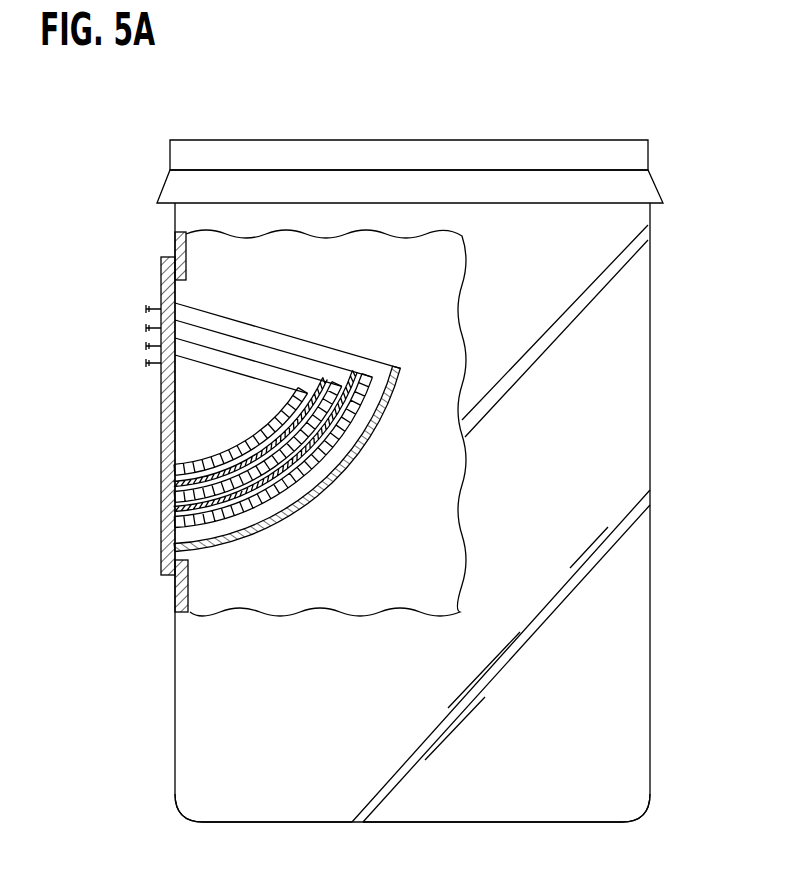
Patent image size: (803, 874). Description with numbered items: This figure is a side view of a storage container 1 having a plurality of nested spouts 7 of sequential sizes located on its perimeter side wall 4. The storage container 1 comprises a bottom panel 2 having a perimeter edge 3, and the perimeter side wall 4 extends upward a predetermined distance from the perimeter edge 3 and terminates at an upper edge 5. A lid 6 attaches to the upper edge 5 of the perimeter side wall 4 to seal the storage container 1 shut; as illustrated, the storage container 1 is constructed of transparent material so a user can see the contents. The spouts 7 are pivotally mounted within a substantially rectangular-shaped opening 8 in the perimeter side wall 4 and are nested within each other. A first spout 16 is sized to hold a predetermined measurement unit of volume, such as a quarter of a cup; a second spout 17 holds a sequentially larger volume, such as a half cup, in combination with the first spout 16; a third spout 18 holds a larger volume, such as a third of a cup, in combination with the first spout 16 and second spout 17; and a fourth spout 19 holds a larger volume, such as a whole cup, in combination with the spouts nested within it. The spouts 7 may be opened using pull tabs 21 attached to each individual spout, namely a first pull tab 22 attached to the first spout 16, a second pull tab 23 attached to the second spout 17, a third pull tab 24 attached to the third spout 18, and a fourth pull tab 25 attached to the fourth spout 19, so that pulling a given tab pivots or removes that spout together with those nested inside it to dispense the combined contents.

The storage container 1 is at (381, 457).
The bottom panel 2 is at (537, 822).
The perimeter edge 3 is at (287, 822).
The perimeter side wall 4 is at (565, 478).
The upper edge 5 is at (632, 190).
The lid 6 is at (632, 157).
The spouts 7 is at (239, 438).
The substantially rectangular-shaped opening 8 is at (178, 291).
The first spout 16 is at (193, 455).
The second spout 17 is at (193, 485).
The third spout 18 is at (193, 513).
The fourth spout 19 is at (193, 540).
The pull tabs 21 is at (109, 345).
The first pull tab 22 is at (145, 363).
The second pull tab 23 is at (145, 346).
The third pull tab 24 is at (145, 328).
The fourth pull tab 25 is at (145, 309).